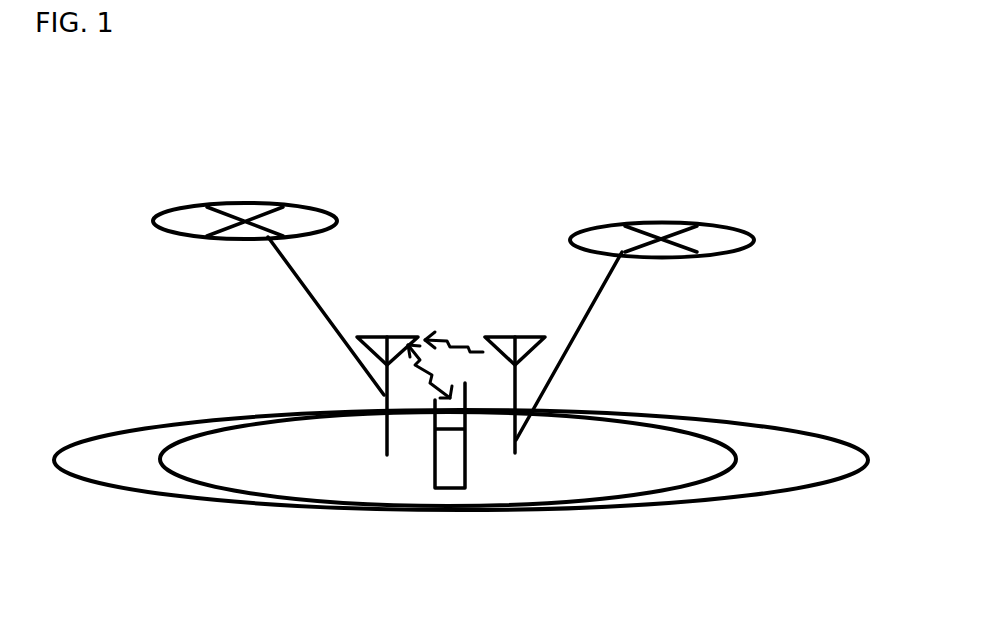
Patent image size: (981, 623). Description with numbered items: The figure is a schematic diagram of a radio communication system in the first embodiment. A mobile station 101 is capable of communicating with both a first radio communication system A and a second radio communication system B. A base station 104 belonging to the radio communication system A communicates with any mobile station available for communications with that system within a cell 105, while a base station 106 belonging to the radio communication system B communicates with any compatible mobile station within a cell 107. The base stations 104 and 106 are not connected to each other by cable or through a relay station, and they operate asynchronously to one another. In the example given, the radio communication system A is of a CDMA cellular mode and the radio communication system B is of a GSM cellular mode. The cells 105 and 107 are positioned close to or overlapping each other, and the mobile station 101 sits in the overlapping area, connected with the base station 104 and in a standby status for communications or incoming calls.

The mobile station 101 is at (448, 475).
The base station 104 is at (403, 335).
The cell 105 is at (135, 478).
The base station 106 is at (503, 335).
The cell 107 is at (735, 498).
The first radio communication system A is at (238, 203).
The second radio communication system B is at (667, 222).